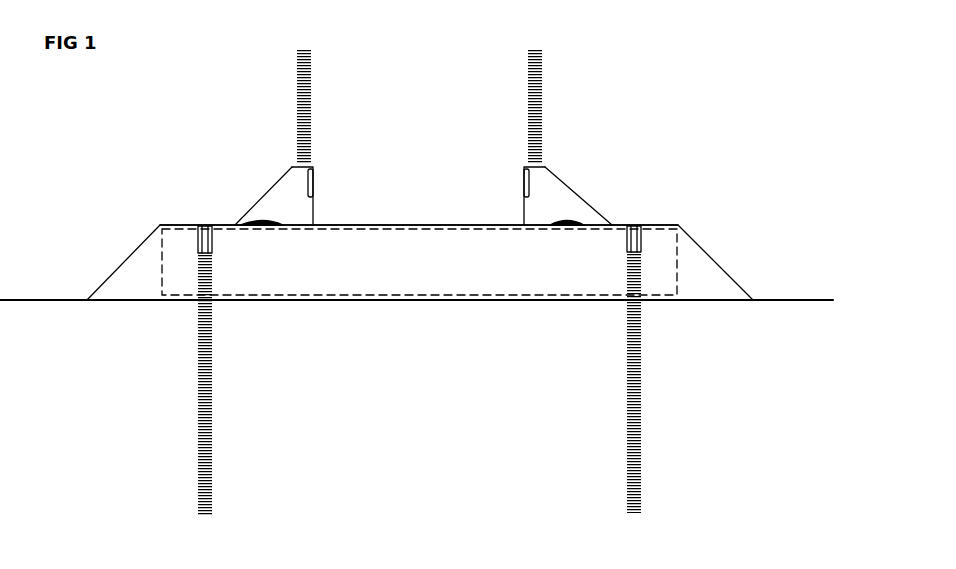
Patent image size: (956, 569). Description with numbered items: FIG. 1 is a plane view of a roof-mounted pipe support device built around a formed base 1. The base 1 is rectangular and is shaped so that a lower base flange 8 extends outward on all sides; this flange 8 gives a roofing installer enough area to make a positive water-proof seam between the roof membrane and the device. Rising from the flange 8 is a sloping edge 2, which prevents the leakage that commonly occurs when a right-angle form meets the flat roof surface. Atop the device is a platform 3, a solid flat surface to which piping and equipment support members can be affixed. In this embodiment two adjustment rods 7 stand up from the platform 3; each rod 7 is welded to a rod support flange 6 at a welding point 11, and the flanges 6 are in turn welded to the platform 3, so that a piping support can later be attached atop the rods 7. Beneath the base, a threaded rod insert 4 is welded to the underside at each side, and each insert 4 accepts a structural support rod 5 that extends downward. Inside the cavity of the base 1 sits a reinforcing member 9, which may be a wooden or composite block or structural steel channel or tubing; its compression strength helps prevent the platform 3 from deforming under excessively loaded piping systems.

The formed base 1 is at (172, 220).
The sloping edge 2 is at (727, 262).
The platform 3 is at (660, 222).
The threaded rod insert 4 is at (220, 247).
The structural support rod 5 is at (212, 437).
The rod support flange 6 is at (285, 202).
The adjustment rod 7 is at (311, 137).
The lower base flange 8 is at (795, 302).
The reinforcing member 9 is at (180, 253).
The welding point 11 is at (300, 181).